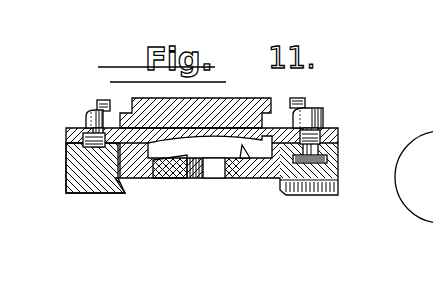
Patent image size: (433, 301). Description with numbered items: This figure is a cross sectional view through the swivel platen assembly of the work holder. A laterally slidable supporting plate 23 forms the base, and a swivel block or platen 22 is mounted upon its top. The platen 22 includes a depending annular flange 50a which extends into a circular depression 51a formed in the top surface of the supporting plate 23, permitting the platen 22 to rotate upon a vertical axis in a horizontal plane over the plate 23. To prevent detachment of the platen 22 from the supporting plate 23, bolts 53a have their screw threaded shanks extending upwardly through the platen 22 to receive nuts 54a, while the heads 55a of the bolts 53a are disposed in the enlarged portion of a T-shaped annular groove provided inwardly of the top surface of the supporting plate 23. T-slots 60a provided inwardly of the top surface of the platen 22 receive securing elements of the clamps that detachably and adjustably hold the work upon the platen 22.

The swivel block or platen 22 is at (130, 100).
The T-slots 60a is at (282, 100).
The nuts 54a is at (326, 117).
The bolts 53a is at (339, 147).
The heads of bolts 55a is at (339, 160).
The depending annular flange 50a is at (142, 152).
The circular depression 51a is at (248, 150).
The laterally slidable supporting plate 23 is at (84, 192).